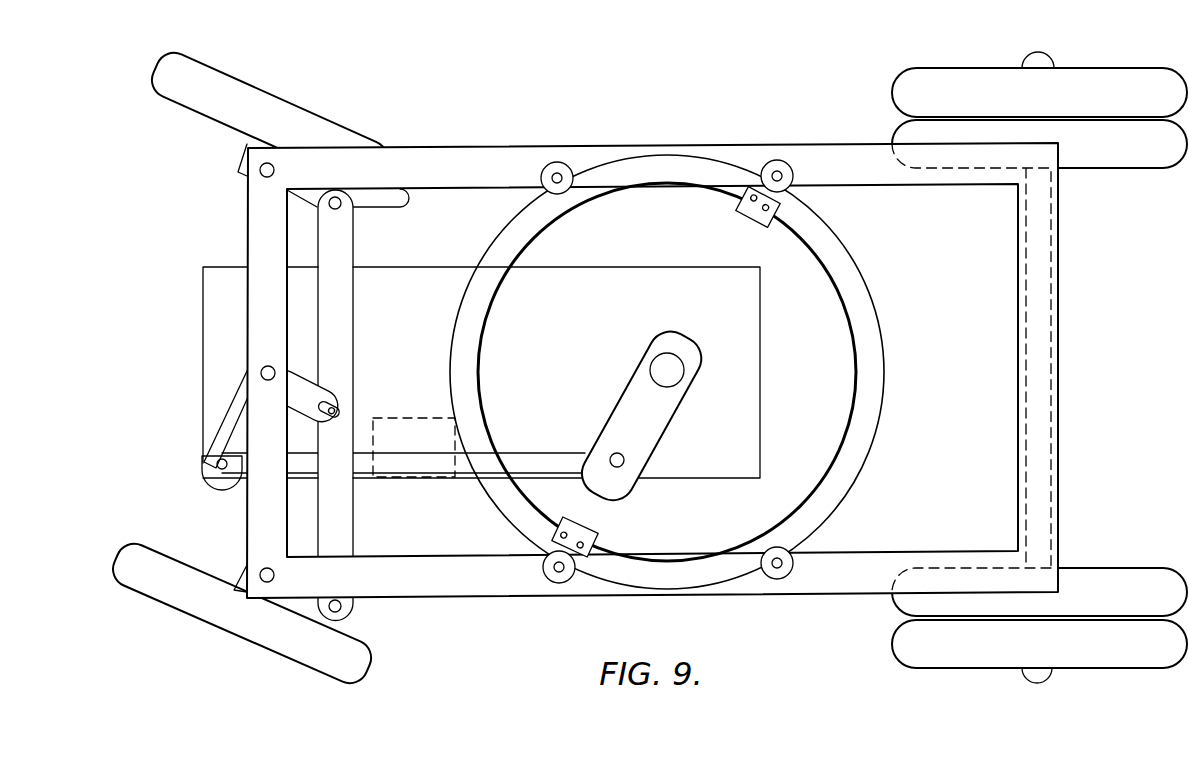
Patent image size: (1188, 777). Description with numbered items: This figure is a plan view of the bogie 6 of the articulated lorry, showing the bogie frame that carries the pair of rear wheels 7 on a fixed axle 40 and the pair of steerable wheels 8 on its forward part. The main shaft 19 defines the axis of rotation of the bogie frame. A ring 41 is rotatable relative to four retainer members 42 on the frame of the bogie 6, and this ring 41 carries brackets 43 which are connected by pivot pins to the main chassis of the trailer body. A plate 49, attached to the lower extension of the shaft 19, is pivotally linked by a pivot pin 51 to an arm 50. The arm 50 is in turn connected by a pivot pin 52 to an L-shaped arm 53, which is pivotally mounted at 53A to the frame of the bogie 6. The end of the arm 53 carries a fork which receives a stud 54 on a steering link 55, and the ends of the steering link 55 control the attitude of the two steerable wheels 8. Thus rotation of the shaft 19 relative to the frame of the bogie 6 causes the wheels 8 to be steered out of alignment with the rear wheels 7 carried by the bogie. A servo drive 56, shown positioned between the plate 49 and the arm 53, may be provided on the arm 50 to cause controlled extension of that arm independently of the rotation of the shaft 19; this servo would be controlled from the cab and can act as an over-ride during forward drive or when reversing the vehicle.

The bogie 6 is at (487, 160).
The rear wheels 7 is at (1114, 156).
The steerable wheels 8 is at (242, 96).
The main shaft 19 is at (660, 362).
The fixed axle 40 is at (1052, 353).
The ring 41 is at (636, 165).
The retainer members 42 is at (777, 162).
The brackets 43 is at (765, 213).
The plate 49 is at (660, 416).
The arm 50 is at (536, 452).
The pivot pin 51 is at (622, 465).
The pivot pin 52 is at (225, 477).
The L-shaped arm 53 is at (227, 411).
The pivot mounting 53A is at (260, 370).
The stud 54 is at (347, 402).
The steering link 55 is at (343, 350).
The servo drive 56 is at (410, 478).